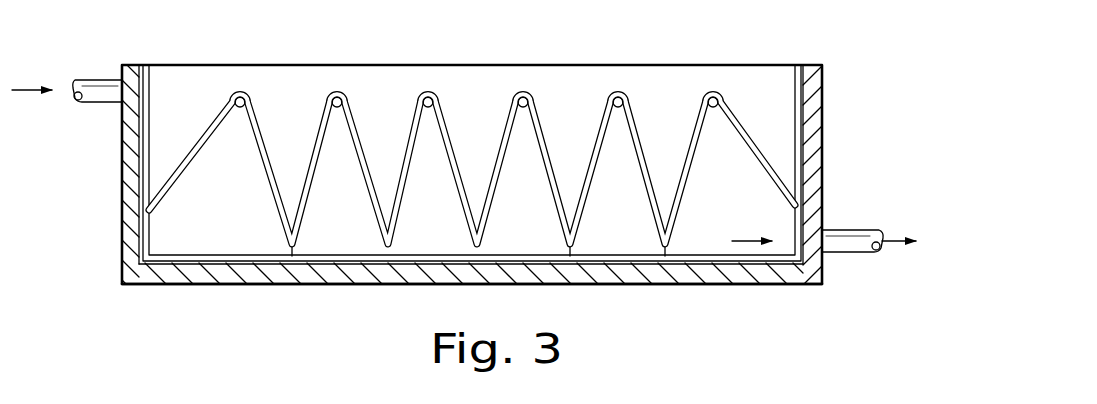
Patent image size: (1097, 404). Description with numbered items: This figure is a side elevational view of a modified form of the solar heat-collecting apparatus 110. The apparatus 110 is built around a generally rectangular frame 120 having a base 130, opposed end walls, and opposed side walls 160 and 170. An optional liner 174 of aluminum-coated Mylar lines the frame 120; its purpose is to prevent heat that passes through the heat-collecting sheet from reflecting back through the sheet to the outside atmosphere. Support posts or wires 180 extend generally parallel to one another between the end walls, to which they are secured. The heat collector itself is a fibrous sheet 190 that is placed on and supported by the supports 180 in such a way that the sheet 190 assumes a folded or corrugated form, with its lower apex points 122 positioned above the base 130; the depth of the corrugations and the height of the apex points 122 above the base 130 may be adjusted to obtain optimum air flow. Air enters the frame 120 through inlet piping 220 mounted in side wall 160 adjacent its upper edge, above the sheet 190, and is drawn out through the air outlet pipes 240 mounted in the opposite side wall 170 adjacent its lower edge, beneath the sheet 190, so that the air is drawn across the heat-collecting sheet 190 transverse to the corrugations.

The apparatus 110 is at (161, 44).
The frame 120 is at (131, 285).
The lower apex points 122 is at (292, 256).
The base 130 is at (233, 285).
The side wall 160 is at (122, 215).
The side wall 170 is at (823, 178).
The liner 174 is at (148, 85).
The support posts or wires 180 is at (472, 170).
The fibrous sheet 190 is at (339, 92).
The inlet pipe 220 is at (111, 92).
The air outlet pipes 240 is at (847, 238).